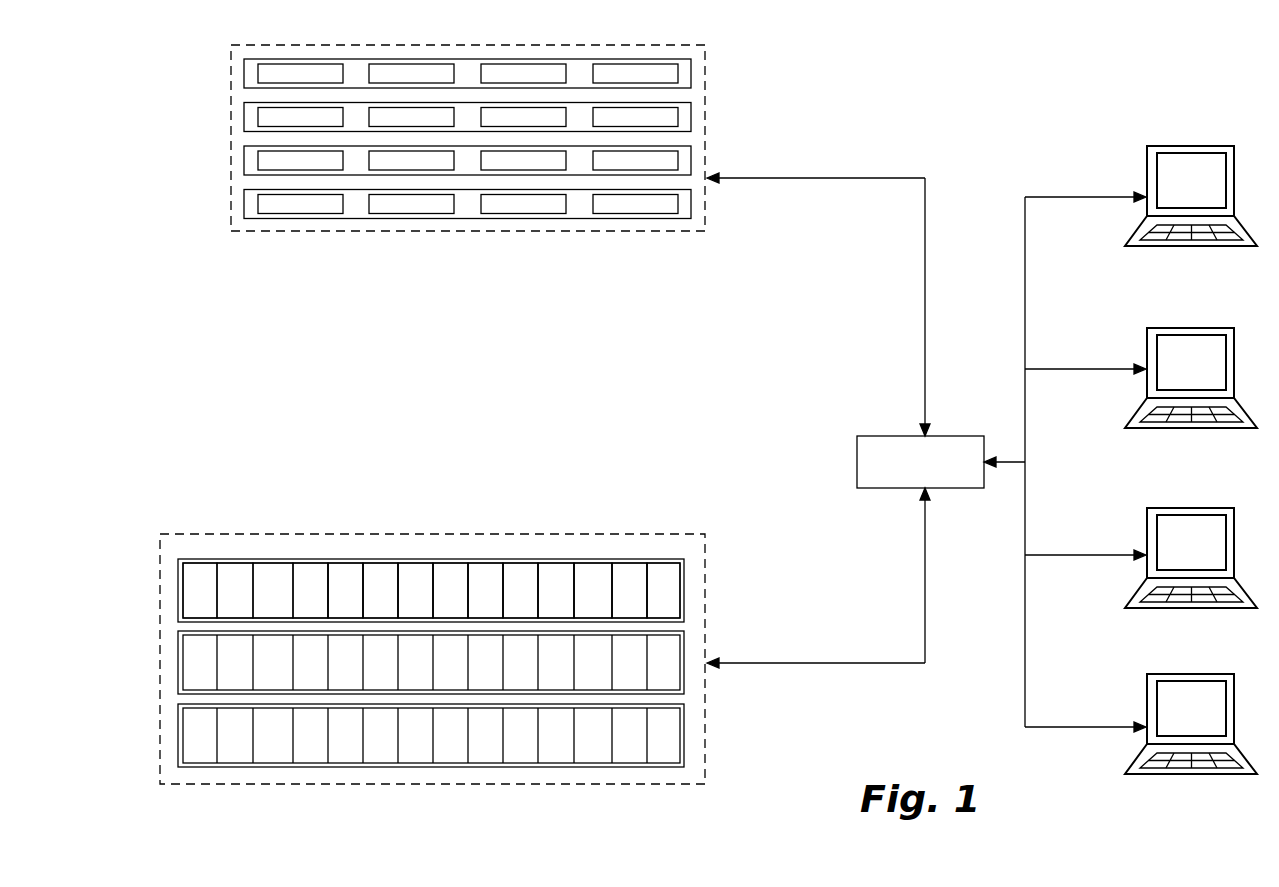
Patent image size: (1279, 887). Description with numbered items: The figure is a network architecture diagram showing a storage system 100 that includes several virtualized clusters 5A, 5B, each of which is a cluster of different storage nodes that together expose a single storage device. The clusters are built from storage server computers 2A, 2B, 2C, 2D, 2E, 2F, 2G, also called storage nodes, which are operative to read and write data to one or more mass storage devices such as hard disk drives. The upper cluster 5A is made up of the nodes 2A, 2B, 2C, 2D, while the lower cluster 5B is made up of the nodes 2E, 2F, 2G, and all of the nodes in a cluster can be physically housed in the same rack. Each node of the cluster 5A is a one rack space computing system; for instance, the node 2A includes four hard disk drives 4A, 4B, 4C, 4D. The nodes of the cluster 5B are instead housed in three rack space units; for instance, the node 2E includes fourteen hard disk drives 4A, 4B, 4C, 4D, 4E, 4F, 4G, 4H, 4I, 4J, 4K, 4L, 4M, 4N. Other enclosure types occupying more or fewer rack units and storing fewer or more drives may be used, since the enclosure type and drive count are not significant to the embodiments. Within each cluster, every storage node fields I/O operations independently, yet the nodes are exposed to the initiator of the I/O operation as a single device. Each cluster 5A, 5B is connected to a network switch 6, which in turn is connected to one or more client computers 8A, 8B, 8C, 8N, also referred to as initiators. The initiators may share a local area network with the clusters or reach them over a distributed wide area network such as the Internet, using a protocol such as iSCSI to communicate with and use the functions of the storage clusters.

The storage system 100 is at (996, 117).
The virtualized cluster 5A is at (698, 65).
The virtualized cluster 5B is at (698, 555).
The storage server computer 2A is at (682, 82).
The storage server computer 2B is at (682, 126).
The storage server computer 2C is at (682, 170).
The storage server computer 2D is at (684, 214).
The storage server computer 2E is at (682, 610).
The storage server computer 2F is at (682, 680).
The storage server computer 2G is at (682, 752).
The hard disk drive 4A is at (263, 341).
The hard disk drive 4B is at (335, 341).
The hard disk drive 4C is at (409, 341).
The hard disk drive 4D is at (485, 341).
The hard disk drive 4E is at (345, 590).
The hard disk drive 4F is at (380, 590).
The hard disk drive 4G is at (415, 590).
The hard disk drive 4H is at (450, 590).
The hard disk drive 4I is at (485, 590).
The hard disk drive 4J is at (520, 590).
The hard disk drive 4K is at (556, 590).
The hard disk drive 4L is at (593, 590).
The hard disk drive 4M is at (629, 590).
The hard disk drive 4N is at (663, 590).
The network switch 6 is at (950, 488).
The client computer 8A is at (1230, 247).
The client computer 8B is at (1230, 429).
The client computer 8C is at (1230, 609).
The client computer 8N is at (1230, 775).